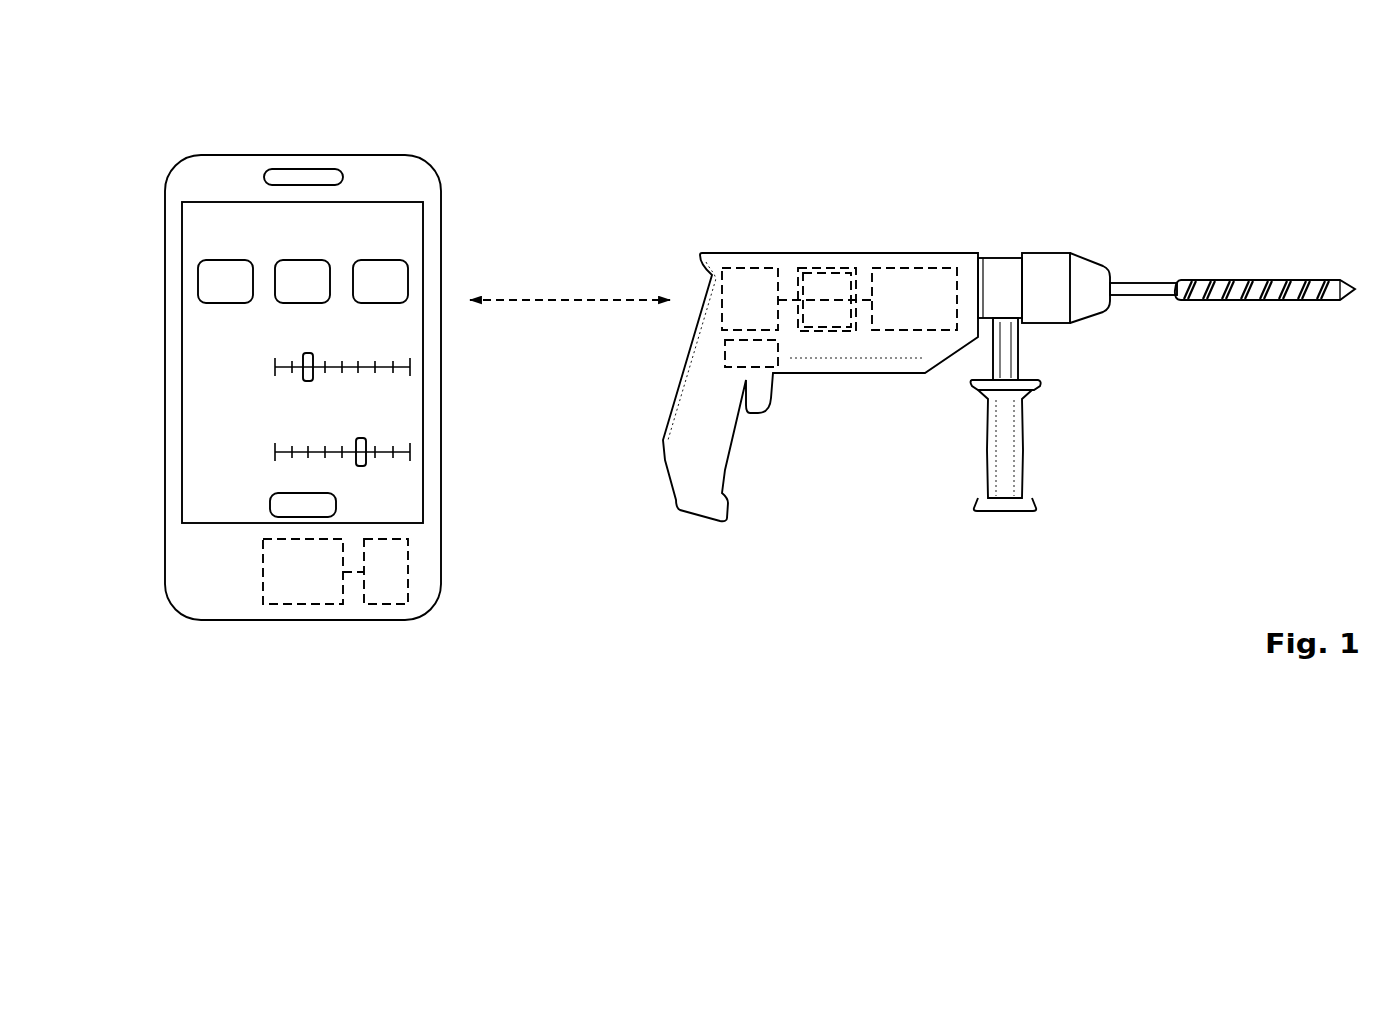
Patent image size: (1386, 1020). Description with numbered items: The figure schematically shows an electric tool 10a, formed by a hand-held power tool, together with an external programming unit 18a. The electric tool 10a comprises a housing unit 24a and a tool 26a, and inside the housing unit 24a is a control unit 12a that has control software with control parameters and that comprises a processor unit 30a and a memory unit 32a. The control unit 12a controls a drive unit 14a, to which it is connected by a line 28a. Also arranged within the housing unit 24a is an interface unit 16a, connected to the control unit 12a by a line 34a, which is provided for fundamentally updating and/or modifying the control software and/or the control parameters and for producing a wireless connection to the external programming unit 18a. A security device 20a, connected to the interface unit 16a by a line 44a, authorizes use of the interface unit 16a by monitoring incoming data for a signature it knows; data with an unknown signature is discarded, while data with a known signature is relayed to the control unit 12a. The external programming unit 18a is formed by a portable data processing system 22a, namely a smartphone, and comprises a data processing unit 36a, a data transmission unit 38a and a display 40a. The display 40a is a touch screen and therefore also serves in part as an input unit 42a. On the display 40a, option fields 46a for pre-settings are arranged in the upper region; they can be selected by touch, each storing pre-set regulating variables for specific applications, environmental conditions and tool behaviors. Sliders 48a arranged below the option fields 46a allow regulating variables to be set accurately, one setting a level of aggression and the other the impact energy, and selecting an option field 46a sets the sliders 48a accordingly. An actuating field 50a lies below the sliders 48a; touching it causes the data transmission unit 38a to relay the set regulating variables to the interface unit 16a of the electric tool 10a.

The electric tool 10a is at (1108, 422).
The control unit 12a is at (847, 342).
The drive unit 14a is at (925, 318).
The interface unit 16a is at (752, 285).
The external programming unit 18a is at (444, 138).
The security device 20a is at (726, 366).
The portable data processing system 22a is at (345, 128).
The housing unit 24a is at (973, 267).
The tool 26a is at (1232, 282).
The line 28a is at (862, 293).
The processor unit 30a is at (817, 322).
The memory unit 32a is at (833, 280).
The line 34a is at (788, 296).
The data processing unit 36a is at (320, 590).
The data transmission unit 38a is at (393, 590).
The display 40a is at (233, 540).
The input unit 42a is at (201, 540).
The line 44a is at (746, 338).
The option fields 46a is at (400, 229).
The sliders 48a is at (236, 362).
The actuating field 50a is at (280, 503).